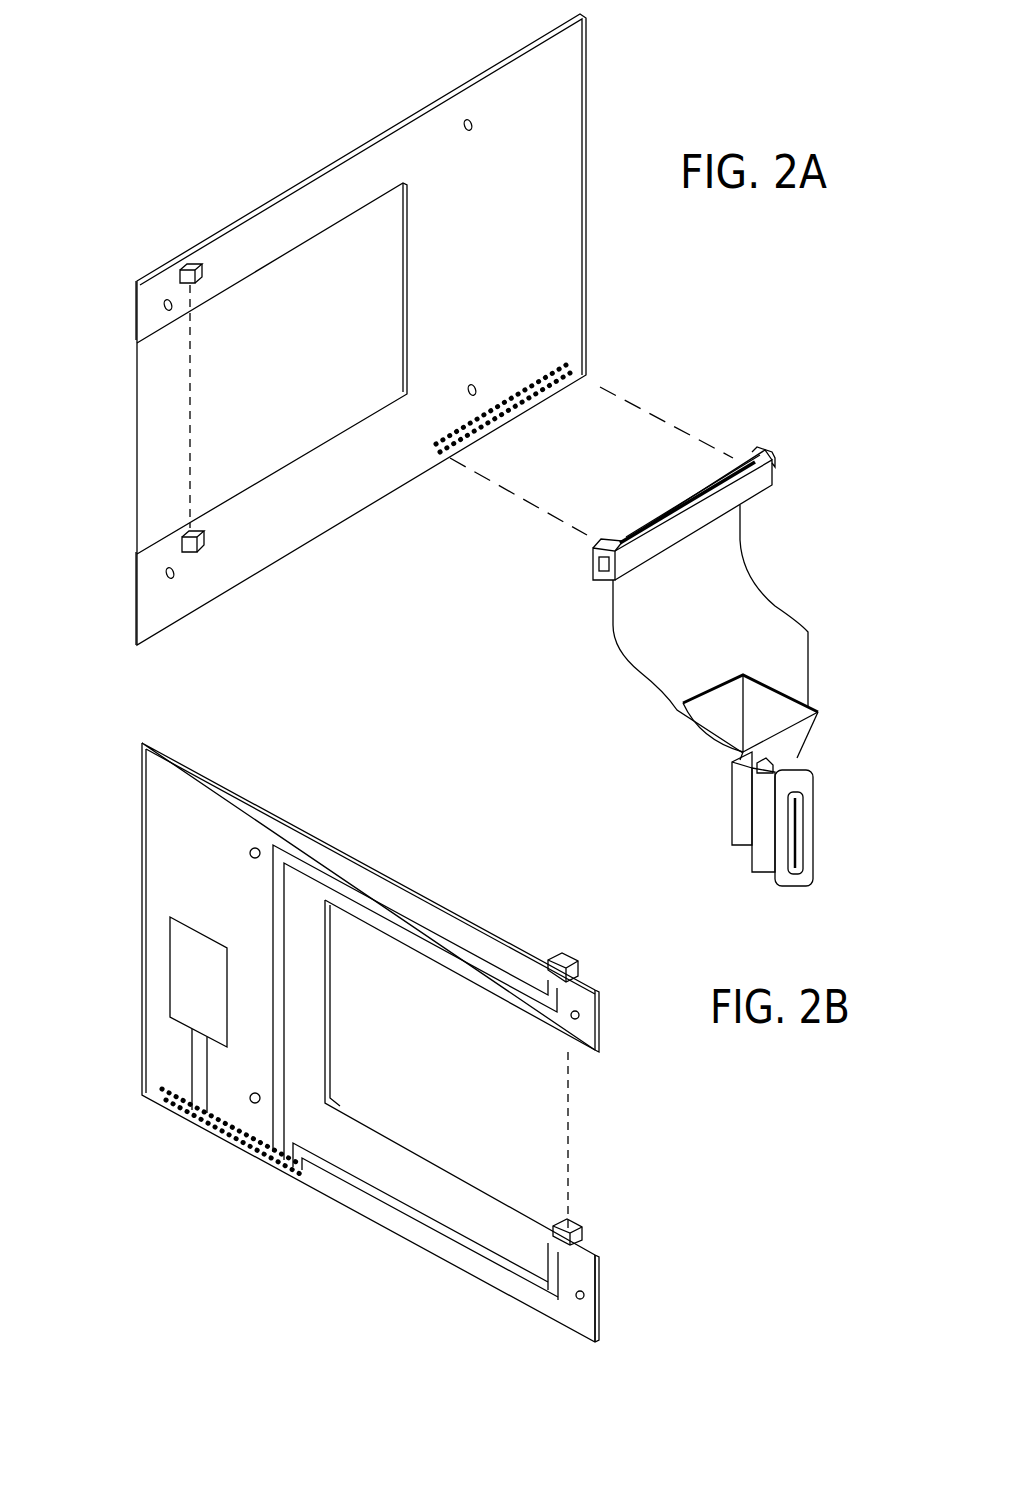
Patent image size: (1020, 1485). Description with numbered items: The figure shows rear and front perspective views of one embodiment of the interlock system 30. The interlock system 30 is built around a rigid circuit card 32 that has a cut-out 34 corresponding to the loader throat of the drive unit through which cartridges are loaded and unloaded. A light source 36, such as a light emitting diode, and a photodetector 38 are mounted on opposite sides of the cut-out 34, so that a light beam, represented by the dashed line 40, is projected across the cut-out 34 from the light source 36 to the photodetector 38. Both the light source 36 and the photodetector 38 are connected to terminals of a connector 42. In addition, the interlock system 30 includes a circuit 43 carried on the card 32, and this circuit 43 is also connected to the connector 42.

In FIG. 2A, the interlock system 30 is at (690, 330).
In FIG. 2B, the interlock system 30 is at (120, 787).
In FIG. 2A, the rigid circuit card 32 is at (585, 73).
In FIG. 2B, the rigid circuit card 32 is at (245, 795).
In FIG. 2A, the cut-out 34 is at (160, 420).
In FIG. 2B, the cut-out 34 is at (612, 1146).
In FIG. 2A, the light source 36 is at (180, 264).
In FIG. 2B, the light source 36 is at (578, 962).
In FIG. 2A, the photodetector 38 is at (200, 545).
In FIG. 2B, the photodetector 38 is at (582, 1238).
In FIG. 2A, the light beam 40 is at (192, 400).
In FIG. 2B, the light beam 40 is at (562, 1115).
In FIG. 2A, the connector 42 is at (813, 823).
In FIG. 2B, the circuit 43 is at (170, 978).